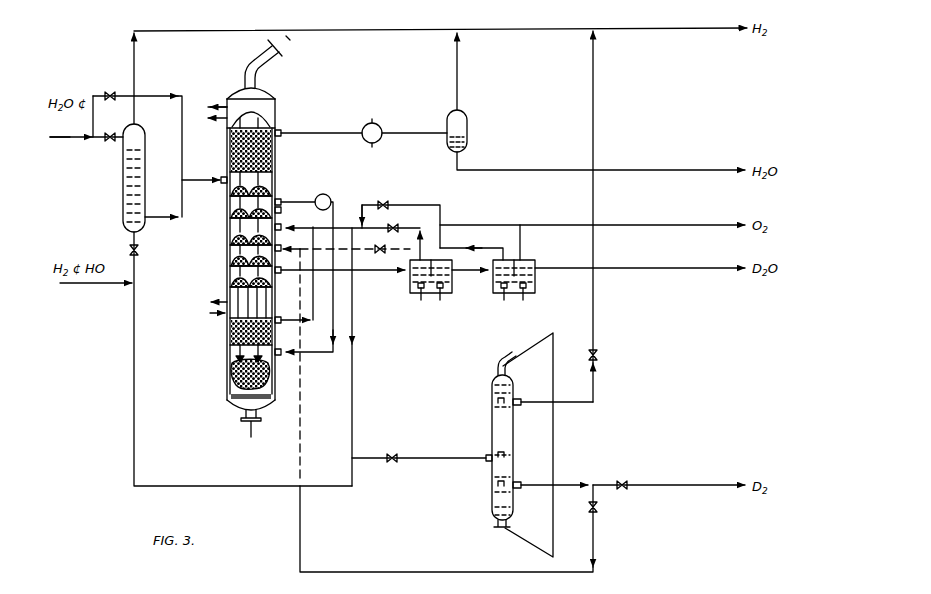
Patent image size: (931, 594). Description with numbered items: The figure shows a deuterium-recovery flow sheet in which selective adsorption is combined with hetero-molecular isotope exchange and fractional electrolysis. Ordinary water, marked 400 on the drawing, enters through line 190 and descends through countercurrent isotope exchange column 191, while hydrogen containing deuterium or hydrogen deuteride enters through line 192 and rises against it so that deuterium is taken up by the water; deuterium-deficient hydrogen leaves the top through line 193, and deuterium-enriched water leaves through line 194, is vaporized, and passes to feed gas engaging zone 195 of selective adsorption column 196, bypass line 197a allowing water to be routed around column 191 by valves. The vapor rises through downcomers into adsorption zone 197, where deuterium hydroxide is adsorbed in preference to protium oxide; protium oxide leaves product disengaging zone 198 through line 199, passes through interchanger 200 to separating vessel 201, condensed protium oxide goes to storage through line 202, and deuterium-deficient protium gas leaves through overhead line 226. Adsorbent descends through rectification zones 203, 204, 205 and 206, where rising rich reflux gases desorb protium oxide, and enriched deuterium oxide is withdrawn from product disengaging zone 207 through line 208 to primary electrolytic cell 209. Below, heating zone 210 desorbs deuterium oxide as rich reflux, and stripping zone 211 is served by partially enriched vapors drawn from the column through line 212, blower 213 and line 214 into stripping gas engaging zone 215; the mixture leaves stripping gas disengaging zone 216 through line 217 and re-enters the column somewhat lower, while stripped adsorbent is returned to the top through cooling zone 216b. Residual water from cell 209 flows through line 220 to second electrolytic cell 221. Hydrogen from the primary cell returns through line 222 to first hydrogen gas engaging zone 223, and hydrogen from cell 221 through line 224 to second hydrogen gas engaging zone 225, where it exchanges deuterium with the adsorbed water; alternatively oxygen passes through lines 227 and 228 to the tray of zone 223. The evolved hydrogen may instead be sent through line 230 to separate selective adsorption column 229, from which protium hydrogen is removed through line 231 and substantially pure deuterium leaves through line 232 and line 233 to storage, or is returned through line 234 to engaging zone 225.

The water inlet line 190 is at (72, 140).
The countercurrent isotope exchange column 191 is at (123, 186).
The hydrogen feed line 192 is at (90, 288).
The deuterium-deficient hydrogen outlet line 193 is at (136, 59).
The enriched water line 194 is at (165, 219).
The feed gas engaging zone 195 is at (226, 186).
The selective adsorption column 196 is at (239, 90).
The adsorption zone 197 is at (277, 152).
The bypass line 197a is at (157, 97).
The product disengaging zone 198 is at (281, 132).
The protium oxide line 199 is at (357, 132).
The interchanger 200 is at (376, 123).
The separating vessel 201 is at (468, 125).
The protium oxide withdrawal line 202 is at (508, 169).
The rectification zone 203 is at (277, 196).
The rectification zone 204 is at (281, 210).
The rectification zone 205 is at (283, 248).
The rectification zone 206 is at (231, 270).
The product disengaging zone 207 is at (226, 302).
The enriched deuterium oxide line 208 is at (368, 272).
The primary electrolytic cell 209 is at (410, 291).
The heating zone 210 is at (231, 320).
The stripping zone 211 is at (231, 360).
The vapor withdrawal line 212 is at (320, 194).
The blower 213 is at (335, 202).
The stripping gas line 214 is at (327, 354).
The stripping gas engaging zone 215 is at (231, 386).
The stripping gas disengaging zone 216 is at (259, 117).
The distributor 216b is at (231, 345).
The stripping gas return line 217 is at (313, 290).
The residual water line 220 is at (462, 273).
The second electrolytic cell 221 is at (536, 288).
The primary cell hydrogen line 222 is at (396, 227).
The first hydrogen gas engaging zone 223 is at (231, 226).
The second cell hydrogen line 224 is at (462, 248).
The second hydrogen gas engaging zone 225 is at (231, 250).
The overhead line 226 is at (458, 82).
The oxygen line 227 is at (456, 225).
The oxygen line 228 is at (400, 204).
The separate selective adsorption column 229 is at (492, 378).
The hydrogen transfer line 230 is at (393, 457).
The hydrogen outlet line 231 is at (577, 403).
The deuterium product line 232 is at (566, 484).
The deuterium storage line 233 is at (650, 487).
The deuterium return line 234 is at (596, 548).
The water feed 400 is at (85, 118).